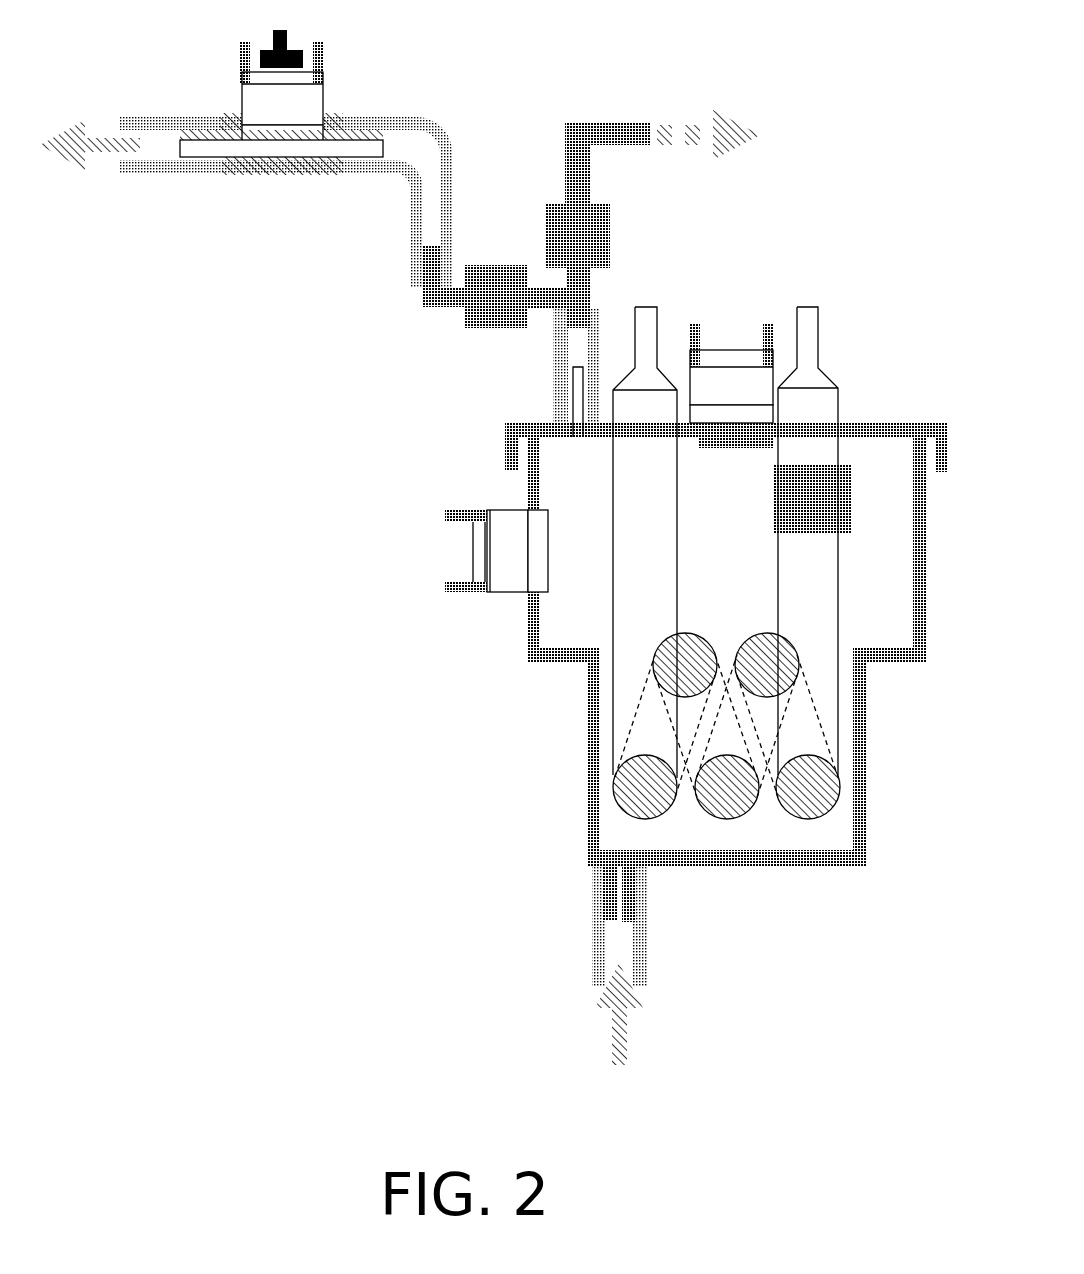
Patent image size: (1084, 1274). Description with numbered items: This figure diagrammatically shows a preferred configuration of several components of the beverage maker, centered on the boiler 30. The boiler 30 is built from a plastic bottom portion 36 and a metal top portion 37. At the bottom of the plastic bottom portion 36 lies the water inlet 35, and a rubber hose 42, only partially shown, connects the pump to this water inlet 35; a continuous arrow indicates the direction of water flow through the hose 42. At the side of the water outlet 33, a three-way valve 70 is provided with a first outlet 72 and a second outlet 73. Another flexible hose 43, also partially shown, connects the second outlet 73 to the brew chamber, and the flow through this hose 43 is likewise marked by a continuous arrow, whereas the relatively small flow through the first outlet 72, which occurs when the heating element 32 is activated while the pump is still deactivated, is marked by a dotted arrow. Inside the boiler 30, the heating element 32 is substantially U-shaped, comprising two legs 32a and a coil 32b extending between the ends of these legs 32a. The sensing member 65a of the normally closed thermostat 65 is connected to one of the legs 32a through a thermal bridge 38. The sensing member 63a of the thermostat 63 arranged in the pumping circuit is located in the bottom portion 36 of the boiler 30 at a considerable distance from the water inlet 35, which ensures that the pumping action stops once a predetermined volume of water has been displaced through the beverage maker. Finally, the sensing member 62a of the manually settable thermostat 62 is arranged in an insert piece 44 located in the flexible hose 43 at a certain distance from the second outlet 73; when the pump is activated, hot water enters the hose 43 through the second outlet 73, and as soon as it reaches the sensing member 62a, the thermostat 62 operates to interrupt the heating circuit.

The boiler 30 is at (770, 827).
The heating element 32 is at (617, 695).
The legs 32a is at (635, 530).
The coil 32b is at (812, 728).
The water outlet 33 is at (572, 368).
The water inlet 35 is at (617, 915).
The plastic bottom portion 36 is at (590, 785).
The metal top portion 37 is at (885, 430).
The thermal bridge 38 is at (833, 497).
The rubber hose 42 is at (640, 955).
The flexible hose 43 is at (440, 145).
The insert piece 44 is at (243, 163).
The manually settable thermostat 62 is at (258, 103).
The sensing member 62a is at (297, 135).
The thermostat 63 is at (505, 583).
The sensing member 63a is at (540, 548).
The normally closed thermostat 65 is at (732, 378).
The sensing member 65a is at (728, 415).
The three-way valve 70 is at (605, 88).
The first outlet 72 is at (630, 125).
The second outlet 73 is at (432, 255).